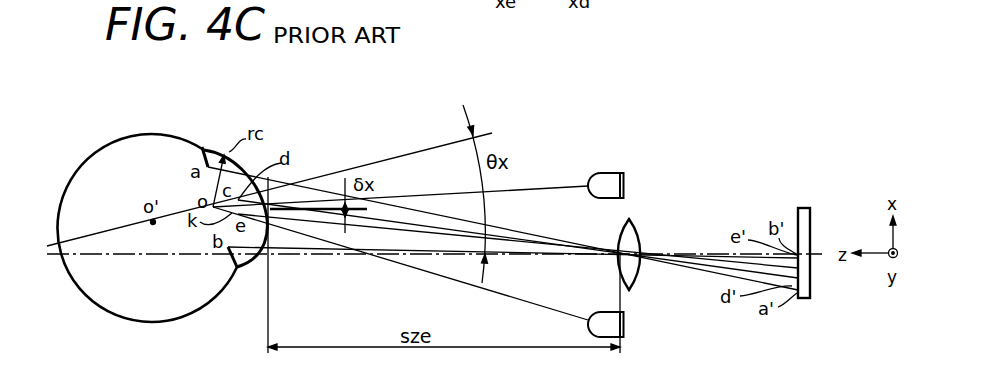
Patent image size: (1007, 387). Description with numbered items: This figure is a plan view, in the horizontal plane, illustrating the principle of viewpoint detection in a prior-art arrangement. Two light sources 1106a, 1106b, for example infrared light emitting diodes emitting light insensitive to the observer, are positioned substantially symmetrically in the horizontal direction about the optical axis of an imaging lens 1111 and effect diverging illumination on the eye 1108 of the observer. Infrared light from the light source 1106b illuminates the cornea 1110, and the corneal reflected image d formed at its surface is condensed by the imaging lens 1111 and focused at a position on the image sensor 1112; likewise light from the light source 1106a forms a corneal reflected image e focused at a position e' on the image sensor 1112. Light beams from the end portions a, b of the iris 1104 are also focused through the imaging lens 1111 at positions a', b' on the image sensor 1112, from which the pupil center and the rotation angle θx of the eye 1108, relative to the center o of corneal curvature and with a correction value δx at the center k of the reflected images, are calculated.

The eyeball 1104 is at (155, 130).
The infrared light emitting diode 1106a is at (627, 327).
The infrared light emitting diode 1106b is at (620, 172).
The cornea 1108 is at (188, 311).
The iris 1110 is at (212, 143).
The light receiving lens 1111 is at (636, 226).
The image sensor 1112 is at (817, 207).